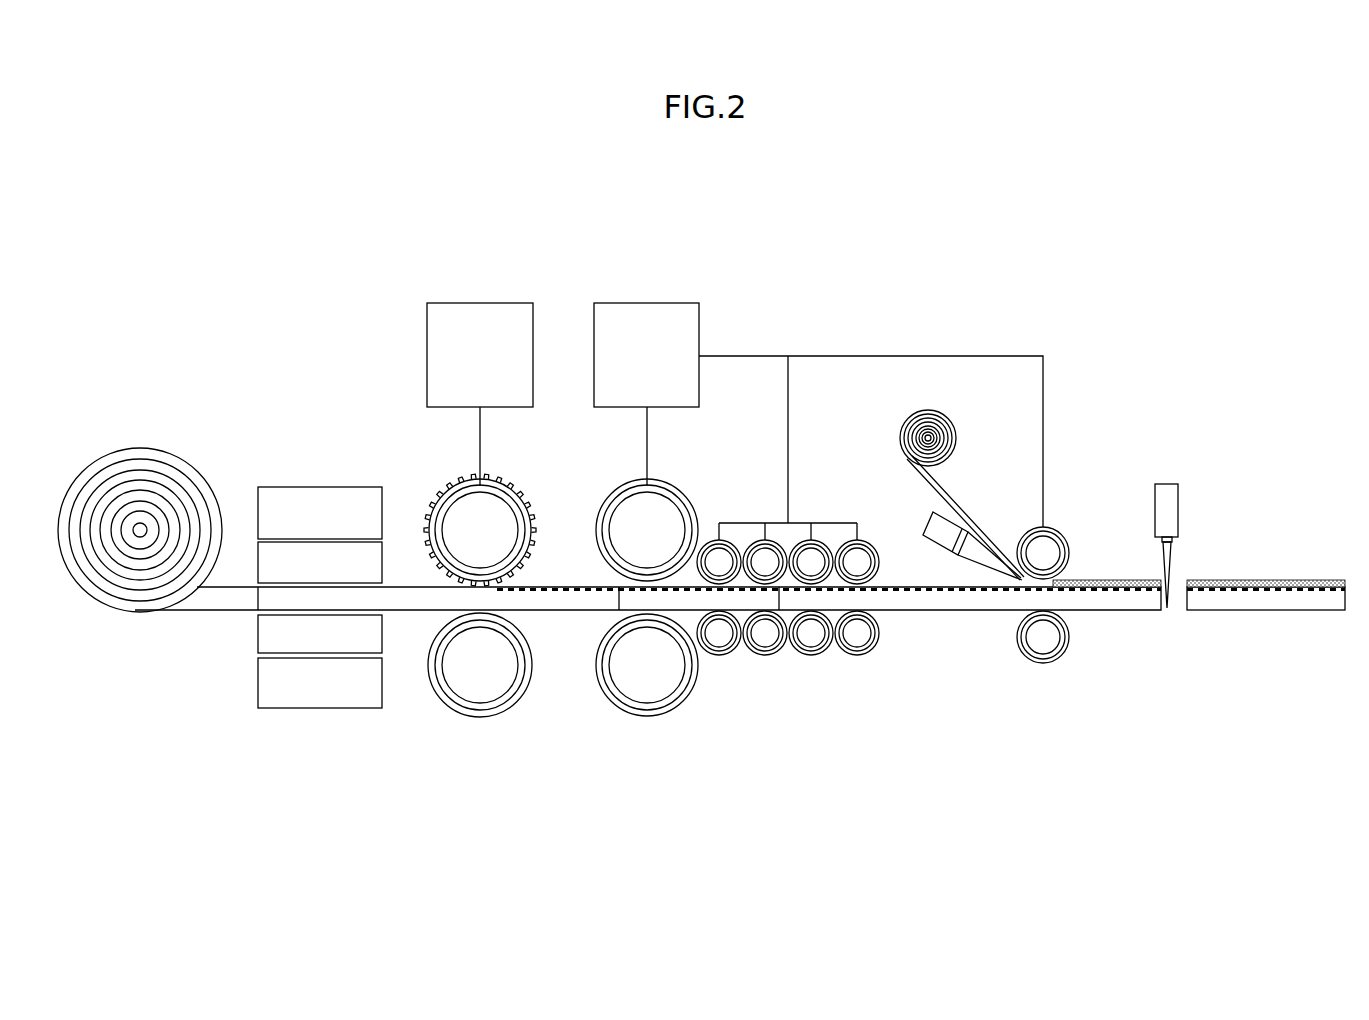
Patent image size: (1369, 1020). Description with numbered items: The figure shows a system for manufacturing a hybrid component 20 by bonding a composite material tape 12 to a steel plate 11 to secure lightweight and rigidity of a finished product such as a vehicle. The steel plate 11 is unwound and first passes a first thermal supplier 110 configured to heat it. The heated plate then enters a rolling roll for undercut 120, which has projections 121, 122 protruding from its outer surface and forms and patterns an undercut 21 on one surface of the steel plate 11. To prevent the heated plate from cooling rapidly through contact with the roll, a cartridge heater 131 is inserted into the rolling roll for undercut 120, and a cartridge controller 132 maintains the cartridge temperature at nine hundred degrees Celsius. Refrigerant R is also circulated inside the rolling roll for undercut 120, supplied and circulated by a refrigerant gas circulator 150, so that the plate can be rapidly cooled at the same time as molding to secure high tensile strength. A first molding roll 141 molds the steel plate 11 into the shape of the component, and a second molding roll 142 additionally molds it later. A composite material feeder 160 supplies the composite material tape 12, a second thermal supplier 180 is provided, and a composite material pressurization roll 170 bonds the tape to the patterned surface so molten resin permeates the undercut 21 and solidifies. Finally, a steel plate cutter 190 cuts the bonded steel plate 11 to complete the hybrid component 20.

The steel plate 11 is at (218, 598).
The composite material tape 12 is at (1101, 580).
The hybrid component 20 is at (1268, 602).
The undercut 21 is at (888, 578).
The first thermal supplier 110 is at (292, 476).
The rolling roll for undercut 120 is at (498, 546).
The projection 121 is at (508, 476).
The projection 122 is at (520, 480).
The cartridge heater 131 is at (522, 502).
The cartridge controller 132 is at (432, 288).
The first molding roll 141 is at (684, 484).
The second molding roll 142 is at (763, 663).
The refrigerant gas circulator 150 is at (694, 288).
The composite material feeder 160 is at (905, 407).
The composite material pressurization roll 170 is at (1060, 524).
The second thermal supplier 180 is at (932, 504).
The steel plate cutter 190 is at (1178, 478).
The refrigerant R is at (684, 498).